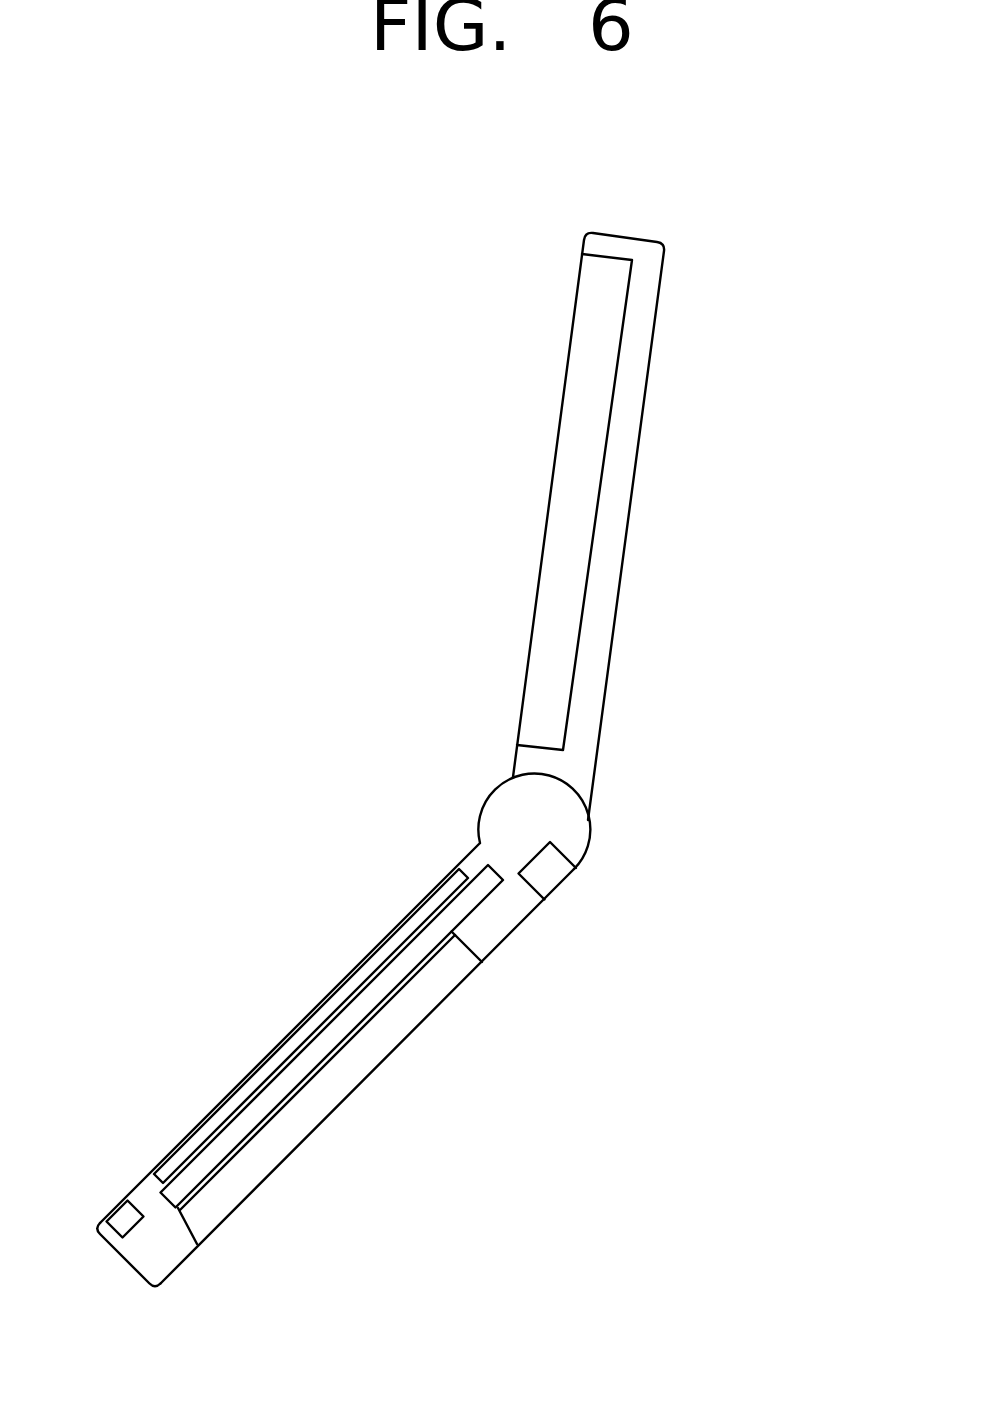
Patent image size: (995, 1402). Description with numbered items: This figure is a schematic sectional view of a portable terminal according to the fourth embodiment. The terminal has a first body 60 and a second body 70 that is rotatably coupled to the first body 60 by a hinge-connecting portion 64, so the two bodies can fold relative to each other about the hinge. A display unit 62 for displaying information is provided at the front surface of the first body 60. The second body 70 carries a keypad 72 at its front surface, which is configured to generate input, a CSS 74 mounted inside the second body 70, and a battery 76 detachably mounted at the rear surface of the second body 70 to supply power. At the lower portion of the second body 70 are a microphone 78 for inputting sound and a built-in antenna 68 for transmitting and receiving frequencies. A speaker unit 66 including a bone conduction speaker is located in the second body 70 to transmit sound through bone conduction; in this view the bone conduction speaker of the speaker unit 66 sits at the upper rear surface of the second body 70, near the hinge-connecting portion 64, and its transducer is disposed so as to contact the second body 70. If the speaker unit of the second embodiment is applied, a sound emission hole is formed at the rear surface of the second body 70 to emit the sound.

The first body 60 is at (703, 512).
The display unit 62 is at (563, 452).
The hinge-connecting portion 64 is at (578, 823).
The speaker unit 66 is at (555, 873).
The built-in antenna 68 is at (143, 1277).
The second body 70 is at (492, 1040).
The keypad 72 is at (267, 1062).
The CSS 74 is at (230, 1138).
The battery 76 is at (335, 1098).
The microphone 78 is at (112, 1230).